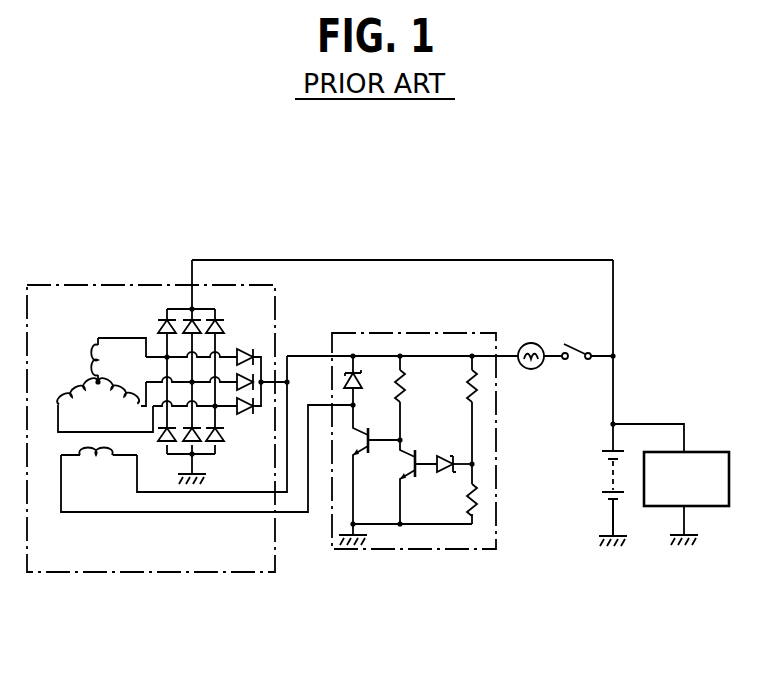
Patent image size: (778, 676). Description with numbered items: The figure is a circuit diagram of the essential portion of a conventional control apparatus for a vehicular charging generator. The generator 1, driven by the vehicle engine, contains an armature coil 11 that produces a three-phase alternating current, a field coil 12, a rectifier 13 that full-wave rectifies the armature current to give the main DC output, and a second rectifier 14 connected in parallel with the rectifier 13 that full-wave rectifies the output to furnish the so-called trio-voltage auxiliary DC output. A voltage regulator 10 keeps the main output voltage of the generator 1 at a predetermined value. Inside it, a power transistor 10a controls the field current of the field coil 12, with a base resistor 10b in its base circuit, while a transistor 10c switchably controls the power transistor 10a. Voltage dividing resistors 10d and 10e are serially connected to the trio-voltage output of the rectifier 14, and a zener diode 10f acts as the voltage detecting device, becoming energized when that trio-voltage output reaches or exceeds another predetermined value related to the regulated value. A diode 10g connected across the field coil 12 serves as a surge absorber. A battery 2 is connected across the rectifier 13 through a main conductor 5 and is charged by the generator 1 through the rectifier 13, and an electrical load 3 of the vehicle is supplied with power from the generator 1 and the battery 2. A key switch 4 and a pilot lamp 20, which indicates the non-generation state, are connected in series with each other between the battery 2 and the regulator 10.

The generator 1 is at (160, 573).
The battery 2 is at (603, 458).
The electrical load 3 is at (697, 452).
The key switch 4 is at (580, 345).
The main conductor 5 is at (550, 260).
The voltage regulator 10 is at (349, 550).
The power transistor 10a is at (366, 452).
The base resistor 10b is at (405, 393).
The transistor 10c is at (409, 472).
The voltage dividing resistor 10d is at (468, 385).
The voltage dividing resistor 10e is at (477, 503).
The zener diode 10f is at (443, 453).
The diode 10g is at (360, 378).
The armature coil 11 is at (95, 356).
The field coil 12 is at (96, 463).
The rectifier 13 is at (163, 325).
The rectifier 14 is at (244, 350).
The pilot lamp 20 is at (527, 343).